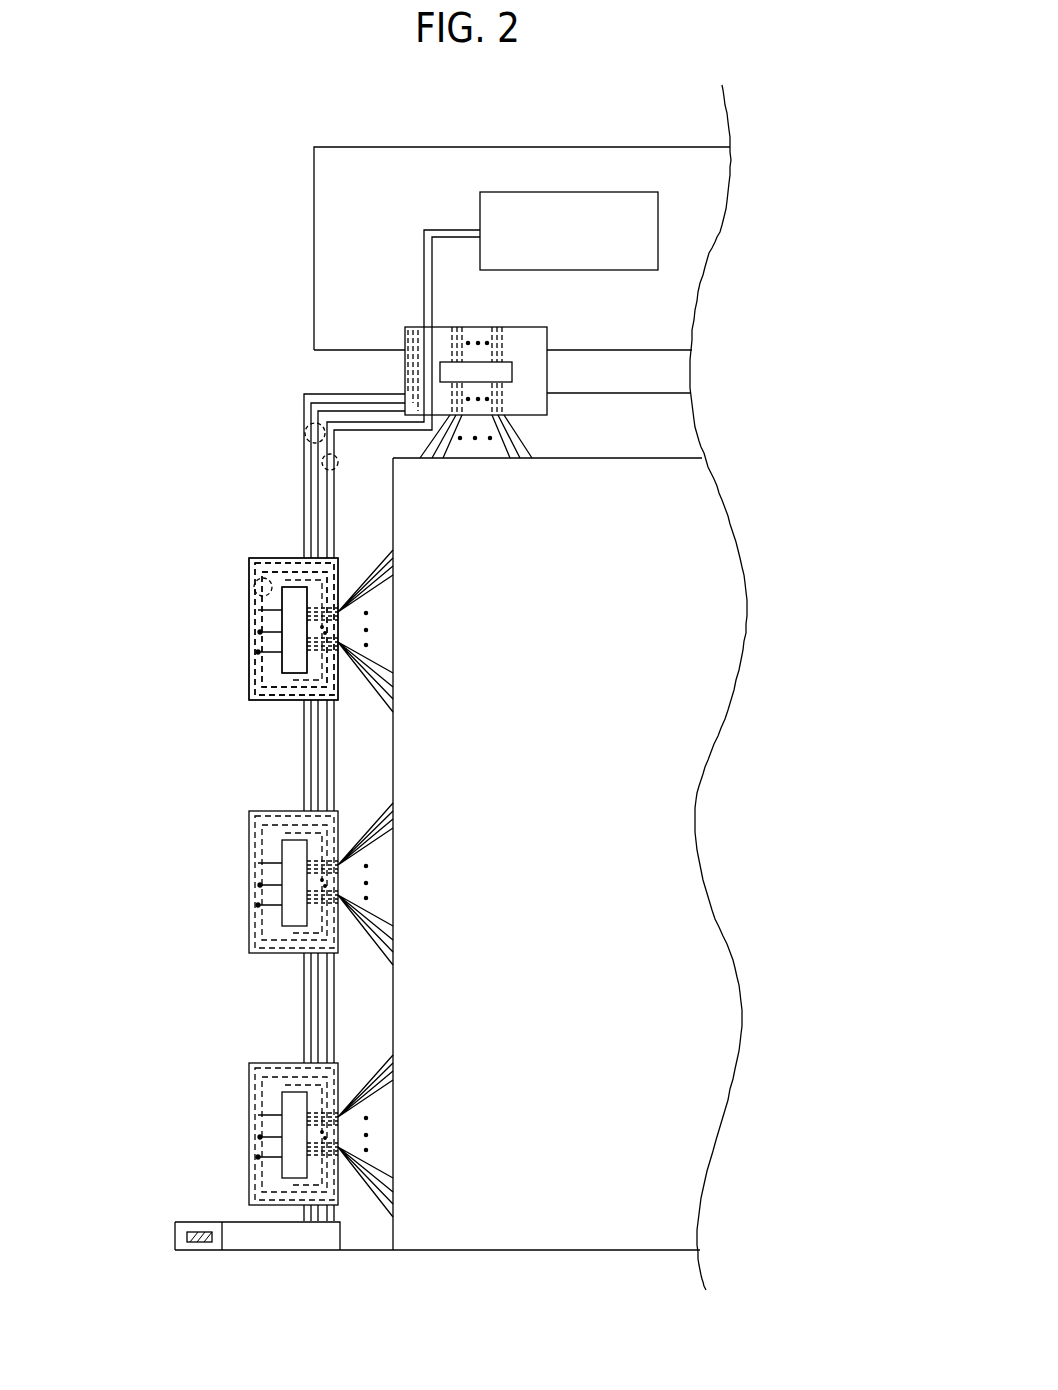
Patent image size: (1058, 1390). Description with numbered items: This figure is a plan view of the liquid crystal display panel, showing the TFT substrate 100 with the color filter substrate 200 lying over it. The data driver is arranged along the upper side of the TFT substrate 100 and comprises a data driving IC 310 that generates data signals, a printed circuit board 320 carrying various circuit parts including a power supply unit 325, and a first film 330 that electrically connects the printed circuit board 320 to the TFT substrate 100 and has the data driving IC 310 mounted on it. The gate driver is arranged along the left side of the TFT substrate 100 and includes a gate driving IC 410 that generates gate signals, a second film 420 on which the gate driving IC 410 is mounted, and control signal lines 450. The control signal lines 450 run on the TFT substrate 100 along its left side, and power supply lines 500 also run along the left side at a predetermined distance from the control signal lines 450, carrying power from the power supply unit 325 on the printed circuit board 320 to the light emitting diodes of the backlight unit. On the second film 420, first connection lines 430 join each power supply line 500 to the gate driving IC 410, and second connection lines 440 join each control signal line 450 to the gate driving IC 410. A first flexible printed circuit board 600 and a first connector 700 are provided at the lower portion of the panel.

The thin film transistor (TFT) substrate 100 is at (678, 432).
The color filter substrate 200 is at (710, 603).
The data driving IC 310 is at (473, 373).
The printed circuit board 320 is at (697, 263).
The power supply unit 325 is at (642, 217).
The first film 330 is at (545, 402).
The gate driving IC 410 is at (293, 665).
The second film 420 is at (250, 688).
The first connection lines 430 is at (322, 590).
The second connection lines 440 is at (252, 640).
The control signal lines 450 is at (302, 433).
The power supply lines 500 is at (318, 467).
The first flexible printed circuit board 600 is at (222, 1252).
The first connector 700 is at (173, 1240).